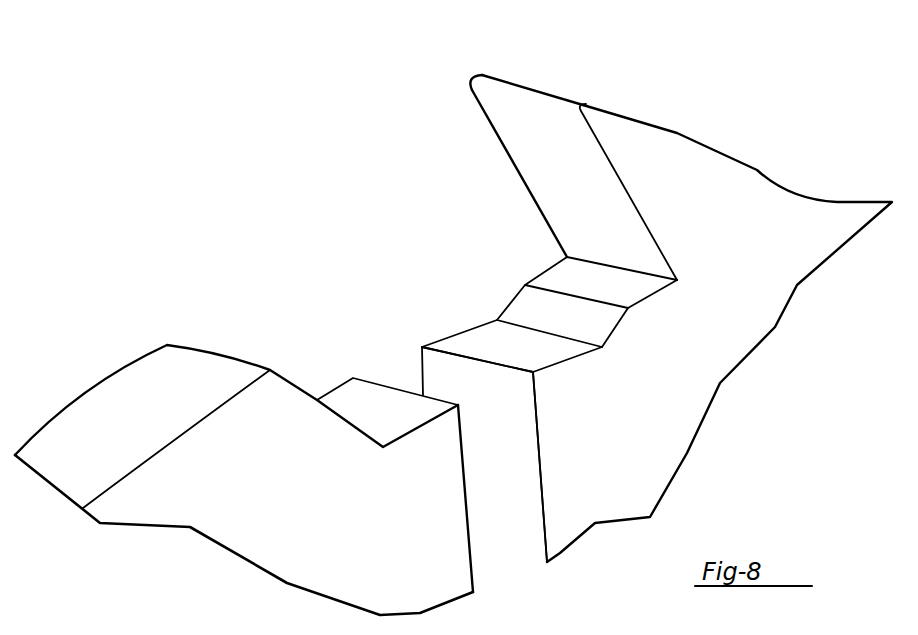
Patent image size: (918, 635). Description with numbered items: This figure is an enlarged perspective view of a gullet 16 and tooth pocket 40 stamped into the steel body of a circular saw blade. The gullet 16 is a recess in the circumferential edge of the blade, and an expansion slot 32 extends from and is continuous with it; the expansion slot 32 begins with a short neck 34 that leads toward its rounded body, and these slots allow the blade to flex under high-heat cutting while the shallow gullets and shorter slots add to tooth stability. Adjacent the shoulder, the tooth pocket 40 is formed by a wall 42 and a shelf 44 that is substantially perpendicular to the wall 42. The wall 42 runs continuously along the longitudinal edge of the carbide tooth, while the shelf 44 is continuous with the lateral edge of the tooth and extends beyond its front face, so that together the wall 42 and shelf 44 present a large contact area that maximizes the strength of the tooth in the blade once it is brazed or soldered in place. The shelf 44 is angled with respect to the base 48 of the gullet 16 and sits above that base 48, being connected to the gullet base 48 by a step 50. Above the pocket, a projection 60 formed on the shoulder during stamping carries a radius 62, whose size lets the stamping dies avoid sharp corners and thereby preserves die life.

The gullet 16 is at (330, 336).
The expansion slot 32 is at (466, 501).
The short neck 34 is at (537, 452).
The tooth pocket 40 is at (530, 199).
The wall 42 is at (573, 153).
The shelf 44 is at (610, 296).
The step 50 is at (567, 328).
The base 48 is at (520, 358).
The projection 60 is at (528, 84).
The radius 62 is at (601, 117).